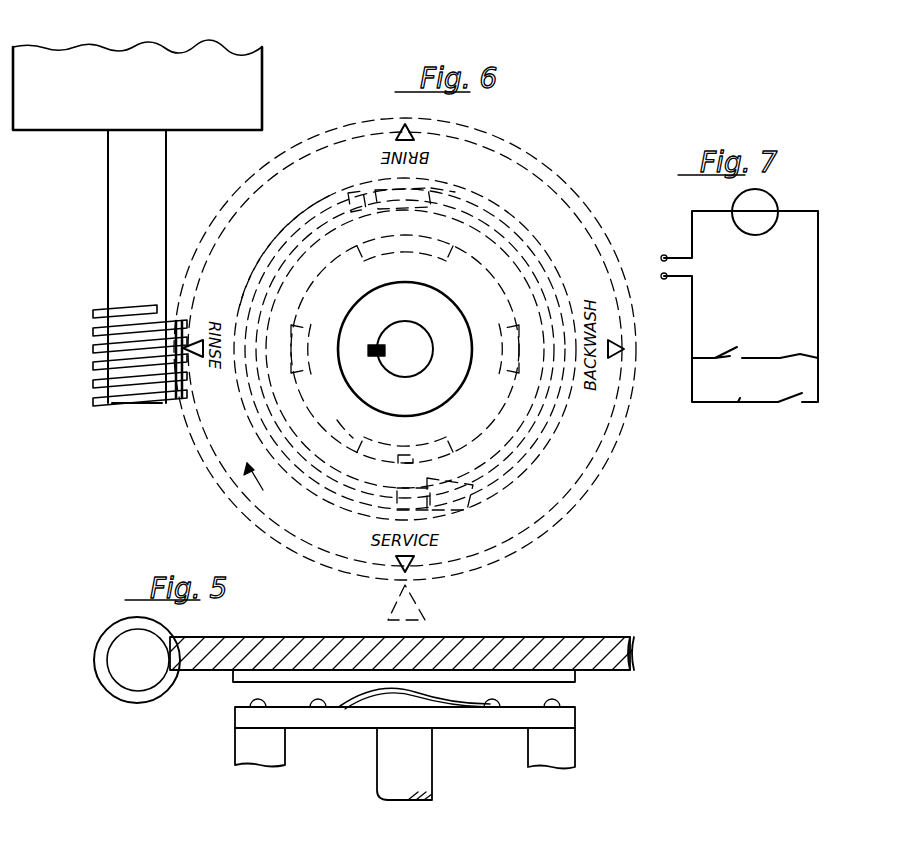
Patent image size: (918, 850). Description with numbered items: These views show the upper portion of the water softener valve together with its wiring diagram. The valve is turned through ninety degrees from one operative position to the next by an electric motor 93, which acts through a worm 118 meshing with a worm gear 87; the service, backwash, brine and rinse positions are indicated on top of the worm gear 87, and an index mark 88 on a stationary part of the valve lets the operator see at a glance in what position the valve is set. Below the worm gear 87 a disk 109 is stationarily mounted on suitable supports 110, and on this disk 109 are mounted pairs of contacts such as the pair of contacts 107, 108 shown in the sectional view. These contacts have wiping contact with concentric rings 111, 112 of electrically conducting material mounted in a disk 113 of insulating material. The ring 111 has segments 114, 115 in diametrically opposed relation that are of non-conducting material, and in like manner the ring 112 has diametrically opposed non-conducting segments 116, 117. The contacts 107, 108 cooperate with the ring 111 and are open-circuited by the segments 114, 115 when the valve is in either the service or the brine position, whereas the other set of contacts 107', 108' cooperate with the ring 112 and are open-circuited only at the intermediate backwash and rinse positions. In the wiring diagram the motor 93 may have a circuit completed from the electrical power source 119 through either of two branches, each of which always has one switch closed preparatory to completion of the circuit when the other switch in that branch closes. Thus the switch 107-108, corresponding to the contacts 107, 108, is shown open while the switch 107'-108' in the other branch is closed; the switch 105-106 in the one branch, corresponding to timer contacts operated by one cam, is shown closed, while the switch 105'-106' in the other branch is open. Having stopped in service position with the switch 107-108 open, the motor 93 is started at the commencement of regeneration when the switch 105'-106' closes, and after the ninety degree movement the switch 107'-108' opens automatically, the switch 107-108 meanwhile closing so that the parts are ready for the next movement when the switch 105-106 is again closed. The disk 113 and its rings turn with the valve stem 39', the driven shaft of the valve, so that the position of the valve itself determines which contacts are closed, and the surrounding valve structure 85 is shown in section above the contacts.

In FIG. 6, the electric motor 93 is at (262, 104).
In FIG. 7, the electric motor 93 is at (778, 206).
In FIG. 6, the worm 118 is at (93, 348).
In FIG. 5, the worm 118 is at (136, 684).
In FIG. 6, the contact 107 is at (374, 192).
In FIG. 5, the contact 107 is at (318, 765).
In FIG. 6, the non-conducting segment 115 is at (440, 190).
In FIG. 6, the concentric ring 111 is at (274, 256).
In FIG. 6, the contact 107' is at (405, 262).
In FIG. 5, the contact 107' is at (397, 735).
In FIG. 6, the shaft 39' is at (403, 325).
In FIG. 5, the shaft 39' is at (386, 778).
In FIG. 6, the non-conducting segment 116 is at (308, 366).
In FIG. 6, the non-conducting segment 117 is at (497, 367).
In FIG. 6, the concentric ring 112 is at (337, 422).
In FIG. 6, the contact 108' is at (413, 438).
In FIG. 5, the contact 108' is at (401, 739).
In FIG. 6, the valve disc 85 is at (186, 456).
In FIG. 5, the valve disc 85 is at (553, 641).
In FIG. 6, the worm gear 87 is at (600, 458).
In FIG. 5, the worm gear 87 is at (629, 642).
In FIG. 6, the insulating disk 113 is at (517, 480).
In FIG. 5, the insulating disk 113 is at (575, 678).
In FIG. 6, the non-conducting segment 114 is at (380, 493).
In FIG. 6, the contact 108 is at (459, 514).
In FIG. 5, the contact 108 is at (453, 747).
In FIG. 6, the index mark 88 is at (415, 593).
In FIG. 5, the disk 109 is at (575, 720).
In FIG. 5, the supports 110 is at (235, 755).
In FIG. 7, the electrical power source 119 is at (672, 244).
In FIG. 7, the switch 107-108 is at (728, 347).
In FIG. 7, the switch 105-106 is at (782, 357).
In FIG. 7, the switch 107'-108' is at (735, 424).
In FIG. 7, the switch 105'-106' is at (790, 440).